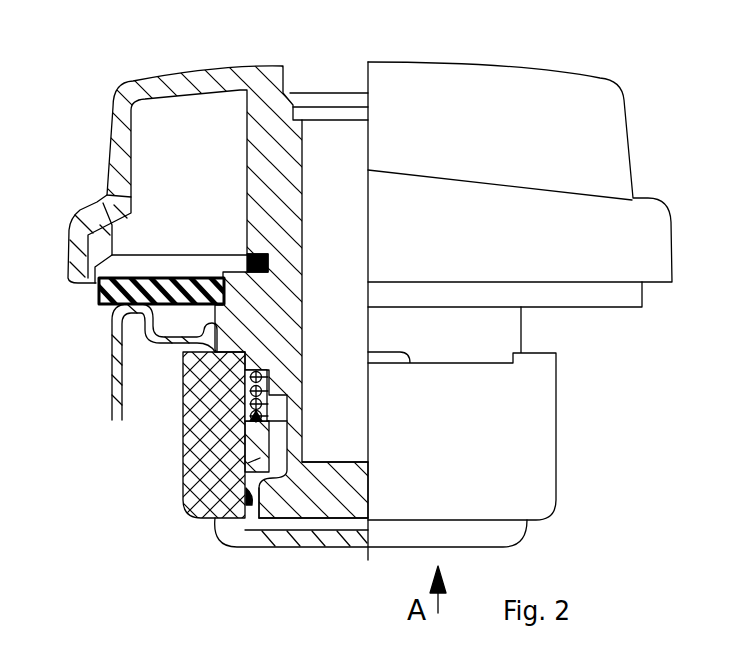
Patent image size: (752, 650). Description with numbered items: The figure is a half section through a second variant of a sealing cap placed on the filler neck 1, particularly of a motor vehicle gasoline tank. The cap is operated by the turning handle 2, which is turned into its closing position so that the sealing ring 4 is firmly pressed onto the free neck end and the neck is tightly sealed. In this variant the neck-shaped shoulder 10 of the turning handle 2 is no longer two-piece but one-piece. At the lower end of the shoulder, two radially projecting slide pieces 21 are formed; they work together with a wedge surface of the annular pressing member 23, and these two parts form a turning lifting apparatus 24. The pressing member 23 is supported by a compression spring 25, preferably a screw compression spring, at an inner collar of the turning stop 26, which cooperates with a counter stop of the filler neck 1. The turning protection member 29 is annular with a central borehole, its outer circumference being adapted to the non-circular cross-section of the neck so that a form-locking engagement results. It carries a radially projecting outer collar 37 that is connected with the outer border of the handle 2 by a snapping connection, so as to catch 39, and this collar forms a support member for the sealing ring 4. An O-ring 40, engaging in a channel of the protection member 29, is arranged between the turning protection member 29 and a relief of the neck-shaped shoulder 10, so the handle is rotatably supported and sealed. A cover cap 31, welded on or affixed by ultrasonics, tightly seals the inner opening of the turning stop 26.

The filler neck 1 is at (112, 379).
The turning handle 2 is at (643, 224).
The sealing ring 4 is at (97, 307).
The neck-shaped shoulder 10 is at (296, 226).
The slide pieces 21 is at (300, 533).
The pressing member 23 is at (247, 498).
The turning lifting apparatus 24 is at (277, 497).
The compression spring 25 is at (248, 463).
The turning stop 26 is at (205, 420).
The turning protection member 29 is at (229, 336).
The cover cap 31 is at (318, 548).
The outer collar 37 is at (168, 252).
The catch 39 is at (72, 294).
The O-ring 40 is at (253, 247).